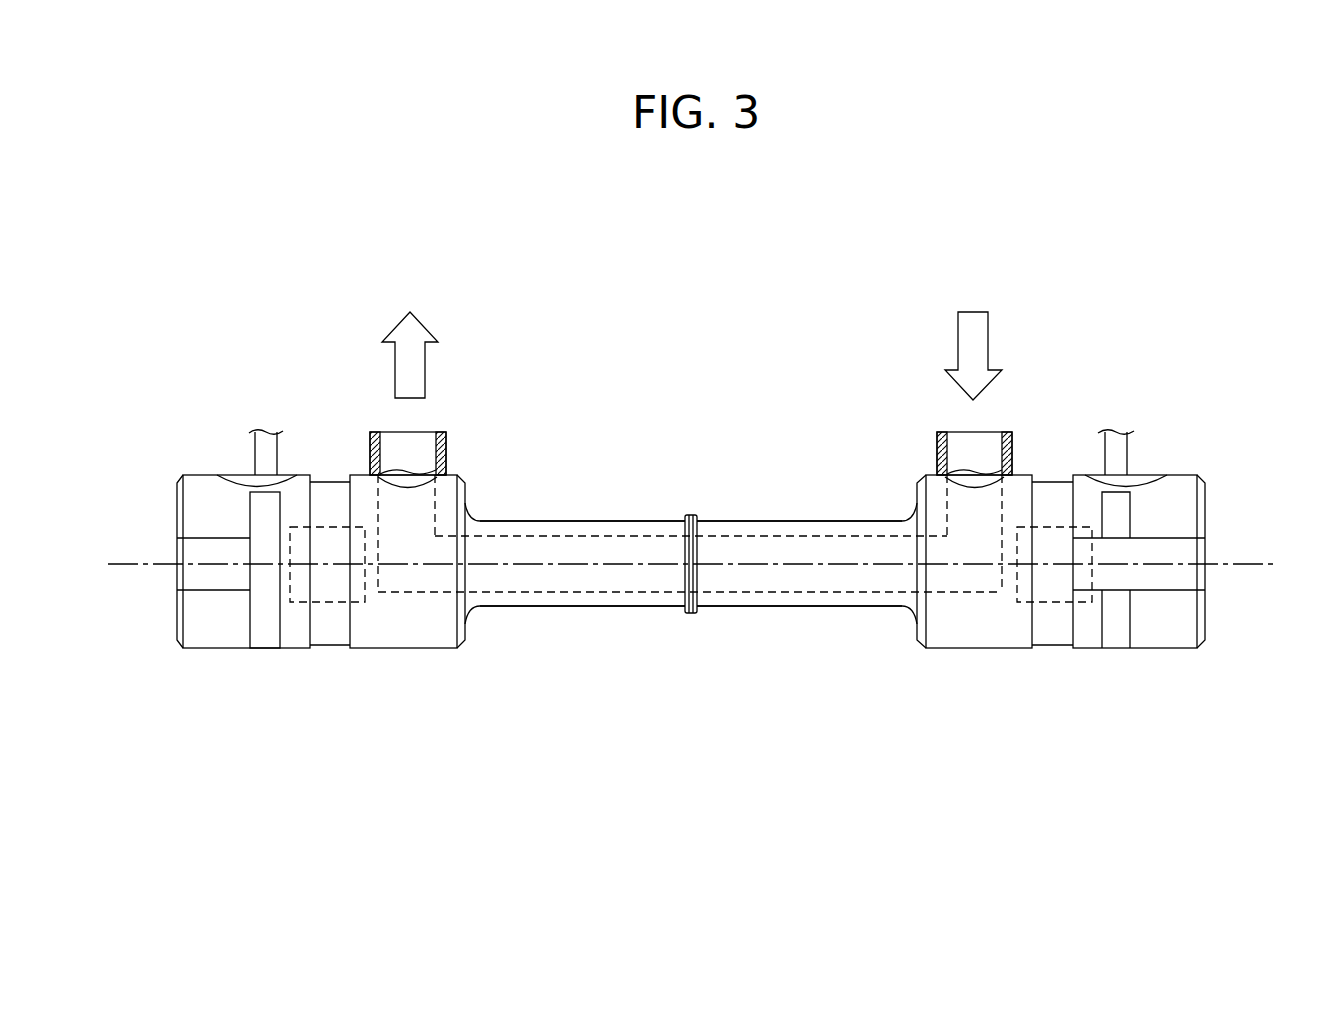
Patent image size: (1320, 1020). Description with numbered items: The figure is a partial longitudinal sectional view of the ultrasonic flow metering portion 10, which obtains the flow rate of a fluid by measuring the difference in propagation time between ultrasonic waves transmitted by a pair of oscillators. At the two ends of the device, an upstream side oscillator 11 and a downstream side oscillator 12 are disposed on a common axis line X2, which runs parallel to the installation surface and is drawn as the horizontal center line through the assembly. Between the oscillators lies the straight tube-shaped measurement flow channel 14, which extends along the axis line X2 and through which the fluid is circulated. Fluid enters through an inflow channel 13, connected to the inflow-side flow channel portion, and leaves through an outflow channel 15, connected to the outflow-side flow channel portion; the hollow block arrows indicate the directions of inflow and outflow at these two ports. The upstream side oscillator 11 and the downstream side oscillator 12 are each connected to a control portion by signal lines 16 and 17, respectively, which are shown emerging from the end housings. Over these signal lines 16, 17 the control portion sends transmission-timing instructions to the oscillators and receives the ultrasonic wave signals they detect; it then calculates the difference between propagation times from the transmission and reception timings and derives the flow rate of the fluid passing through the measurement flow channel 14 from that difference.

The ultrasonic flow metering portion 10 is at (691, 443).
The upstream side oscillator 11 is at (1048, 604).
The downstream side oscillator 12 is at (333, 603).
The inflow channel 13 is at (960, 447).
The measurement flow channel 14 is at (773, 591).
The outflow channel 15 is at (418, 442).
The signal line 16 is at (1127, 450).
The signal line 17 is at (255, 446).
The axis line X2 is at (1237, 565).